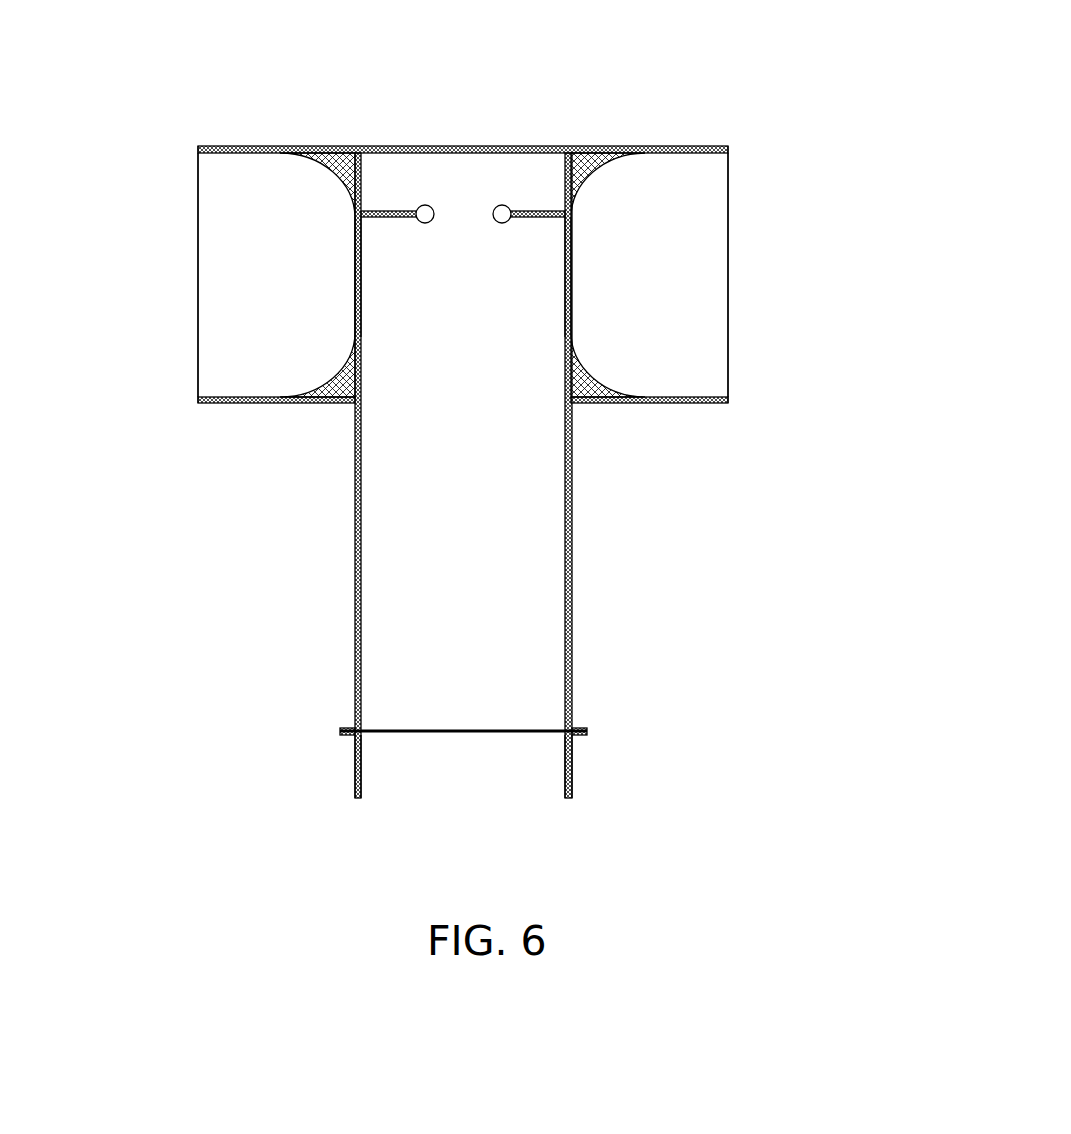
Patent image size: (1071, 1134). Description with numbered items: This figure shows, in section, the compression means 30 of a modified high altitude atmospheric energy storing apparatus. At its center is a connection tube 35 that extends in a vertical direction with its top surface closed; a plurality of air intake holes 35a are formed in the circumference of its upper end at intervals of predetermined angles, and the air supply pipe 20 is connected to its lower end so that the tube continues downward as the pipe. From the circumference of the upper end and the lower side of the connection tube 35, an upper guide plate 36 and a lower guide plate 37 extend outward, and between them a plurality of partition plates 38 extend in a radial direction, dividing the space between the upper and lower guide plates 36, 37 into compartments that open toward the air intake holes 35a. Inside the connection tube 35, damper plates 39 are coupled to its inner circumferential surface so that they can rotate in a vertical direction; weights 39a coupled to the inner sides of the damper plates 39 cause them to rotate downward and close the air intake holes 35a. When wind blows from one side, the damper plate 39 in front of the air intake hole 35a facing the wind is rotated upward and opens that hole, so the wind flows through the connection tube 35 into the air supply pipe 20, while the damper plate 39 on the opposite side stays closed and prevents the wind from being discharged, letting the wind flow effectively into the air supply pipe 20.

The air supply pipe 20 is at (573, 775).
The compression means 30 is at (738, 118).
The connection tube 35 is at (355, 530).
The air intake hole 35a is at (357, 330).
The upper guide plate 36 is at (236, 146).
The lower guide plate 37 is at (676, 404).
The partition plate 38 is at (198, 207).
The damper plate 39 is at (360, 272).
The weight 39a is at (433, 207).